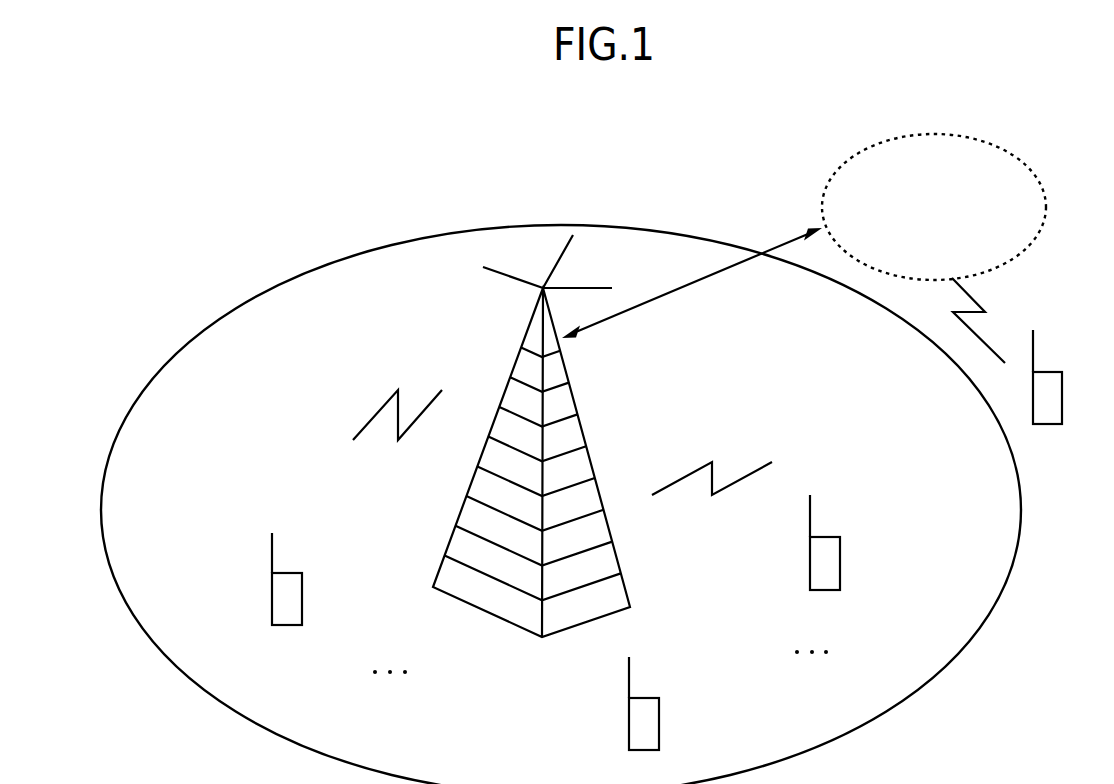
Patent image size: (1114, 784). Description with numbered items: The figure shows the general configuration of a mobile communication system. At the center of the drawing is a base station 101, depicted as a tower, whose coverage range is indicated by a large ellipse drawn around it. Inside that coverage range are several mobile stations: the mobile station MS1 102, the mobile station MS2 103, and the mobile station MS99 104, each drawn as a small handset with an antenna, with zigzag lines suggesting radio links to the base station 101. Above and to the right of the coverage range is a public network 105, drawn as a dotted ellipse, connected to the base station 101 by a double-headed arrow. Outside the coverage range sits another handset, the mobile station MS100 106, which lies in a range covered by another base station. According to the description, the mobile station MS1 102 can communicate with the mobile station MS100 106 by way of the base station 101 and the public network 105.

The base station 101 is at (591, 422).
The mobile station MS1 102 is at (288, 560).
The mobile station MS2 103 is at (646, 683).
The mobile station MS99 104 is at (827, 520).
The public network 105 is at (1034, 121).
The mobile station MS100 106 is at (1048, 355).